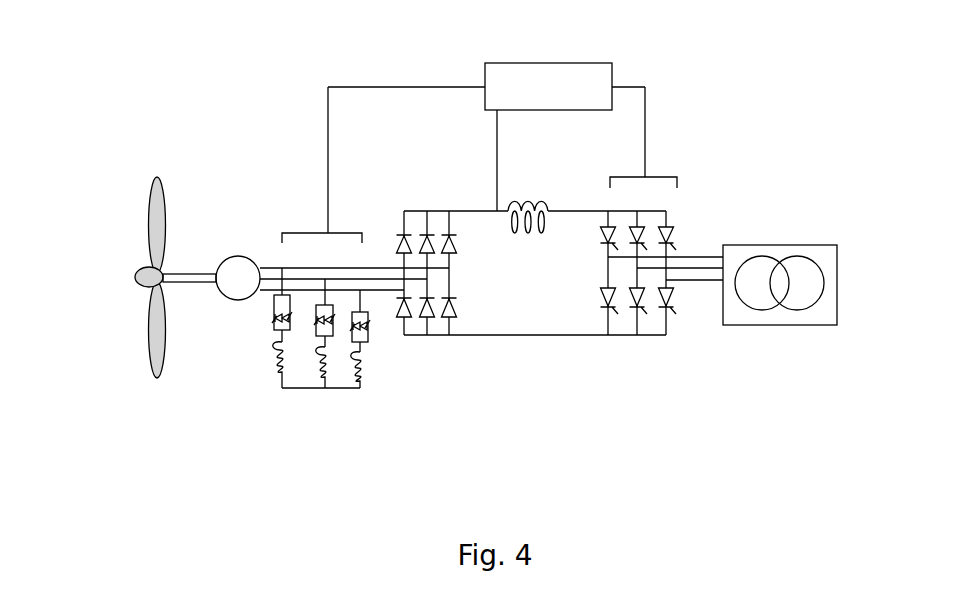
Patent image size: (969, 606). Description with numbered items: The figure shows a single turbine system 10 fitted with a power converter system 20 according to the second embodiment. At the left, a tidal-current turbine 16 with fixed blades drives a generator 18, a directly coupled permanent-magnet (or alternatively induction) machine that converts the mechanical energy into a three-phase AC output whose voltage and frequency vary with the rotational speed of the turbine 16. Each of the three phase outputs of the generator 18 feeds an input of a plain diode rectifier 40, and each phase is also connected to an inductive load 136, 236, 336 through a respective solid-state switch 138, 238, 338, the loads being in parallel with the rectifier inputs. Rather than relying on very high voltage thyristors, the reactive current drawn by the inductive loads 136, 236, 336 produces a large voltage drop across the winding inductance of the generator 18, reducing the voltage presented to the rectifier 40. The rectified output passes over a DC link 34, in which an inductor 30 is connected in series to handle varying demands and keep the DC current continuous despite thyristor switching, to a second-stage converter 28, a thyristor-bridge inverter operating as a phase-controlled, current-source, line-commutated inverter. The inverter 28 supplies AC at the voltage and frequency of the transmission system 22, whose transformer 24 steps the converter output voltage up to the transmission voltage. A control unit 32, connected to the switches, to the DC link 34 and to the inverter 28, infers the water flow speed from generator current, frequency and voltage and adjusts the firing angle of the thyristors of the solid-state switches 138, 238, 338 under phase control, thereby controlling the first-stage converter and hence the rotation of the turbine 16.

The turbine system 10 is at (135, 200).
The turbine 16 is at (159, 188).
The generator 18 is at (238, 256).
The power converter system 20 is at (530, 360).
The transmission system 22 is at (802, 245).
The transformer 24 is at (757, 257).
The second-stage converter 28 is at (622, 337).
The inductor 30 is at (532, 198).
The control unit 32 is at (532, 63).
The DC link 34 is at (485, 208).
The diode rectifier 40 is at (430, 337).
The inductive load 136 is at (273, 368).
The solid-state switch 138 is at (272, 325).
The inductive load 236 is at (317, 367).
The solid-state switch 238 is at (318, 334).
The inductive load 336 is at (361, 378).
The solid-state switch 338 is at (373, 323).